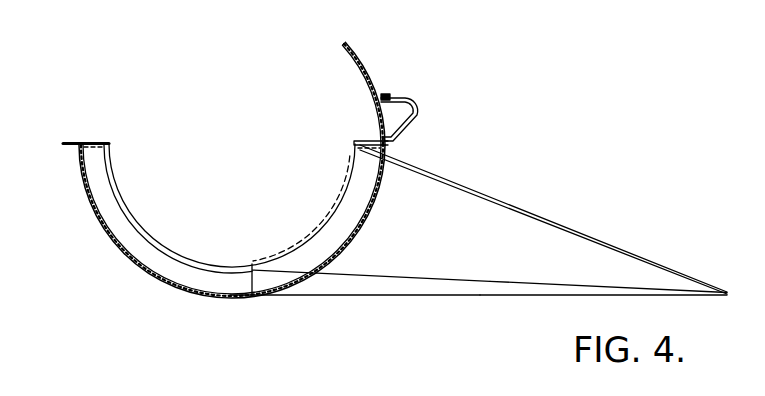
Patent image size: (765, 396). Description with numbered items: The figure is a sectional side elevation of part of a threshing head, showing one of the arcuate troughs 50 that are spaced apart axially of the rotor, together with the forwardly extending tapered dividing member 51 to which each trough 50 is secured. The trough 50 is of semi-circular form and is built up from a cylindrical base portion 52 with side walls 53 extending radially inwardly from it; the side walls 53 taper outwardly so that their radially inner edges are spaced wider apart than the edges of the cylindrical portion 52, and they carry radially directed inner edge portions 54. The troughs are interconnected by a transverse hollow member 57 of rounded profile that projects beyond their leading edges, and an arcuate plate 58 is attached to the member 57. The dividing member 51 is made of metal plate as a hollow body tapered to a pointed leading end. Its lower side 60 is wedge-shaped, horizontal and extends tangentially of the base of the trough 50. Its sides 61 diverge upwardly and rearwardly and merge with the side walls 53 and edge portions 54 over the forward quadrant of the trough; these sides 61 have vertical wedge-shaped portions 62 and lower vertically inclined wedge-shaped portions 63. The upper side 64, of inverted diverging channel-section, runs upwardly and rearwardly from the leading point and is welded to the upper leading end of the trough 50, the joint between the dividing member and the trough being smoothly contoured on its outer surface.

The trough 50 is at (223, 233).
The dividing member 51 is at (467, 297).
The cylindrical base portion 52 is at (137, 268).
The side walls 53 is at (121, 224).
The inner edge portions 54 is at (157, 240).
The transverse hollow member 57 is at (419, 112).
The arcuate plate 58 is at (361, 52).
The lower side 60 is at (345, 297).
The sides 61 is at (518, 273).
The vertical wedge-shaped portions 62 is at (478, 270).
The lower vertically inclined wedge-shaped portions 63 is at (432, 285).
The upper side 64 is at (462, 177).